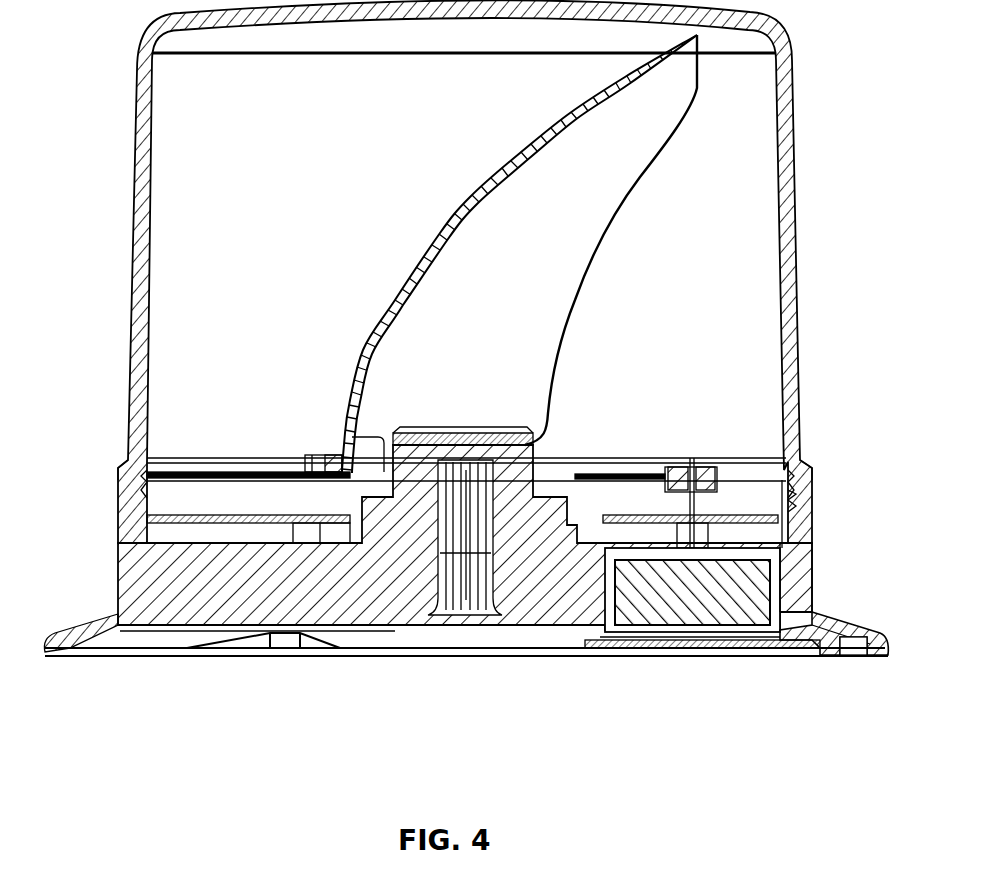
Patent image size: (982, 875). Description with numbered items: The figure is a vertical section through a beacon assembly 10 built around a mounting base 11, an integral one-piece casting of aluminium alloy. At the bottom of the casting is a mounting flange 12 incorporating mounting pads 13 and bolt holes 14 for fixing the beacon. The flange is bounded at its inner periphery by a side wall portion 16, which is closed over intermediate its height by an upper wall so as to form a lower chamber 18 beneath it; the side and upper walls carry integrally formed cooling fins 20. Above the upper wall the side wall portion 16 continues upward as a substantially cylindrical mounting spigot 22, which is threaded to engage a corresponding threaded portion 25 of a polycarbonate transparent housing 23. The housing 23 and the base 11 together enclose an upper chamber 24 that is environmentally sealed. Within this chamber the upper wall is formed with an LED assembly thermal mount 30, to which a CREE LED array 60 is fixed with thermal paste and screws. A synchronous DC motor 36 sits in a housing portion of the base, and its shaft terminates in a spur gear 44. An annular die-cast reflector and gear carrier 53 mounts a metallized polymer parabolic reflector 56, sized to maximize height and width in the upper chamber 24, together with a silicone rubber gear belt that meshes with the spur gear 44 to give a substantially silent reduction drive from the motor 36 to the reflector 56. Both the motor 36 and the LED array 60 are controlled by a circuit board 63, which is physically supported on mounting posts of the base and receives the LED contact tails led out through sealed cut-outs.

The beacon assembly 10 is at (122, 200).
The mounting base 11 is at (118, 575).
The mounting flange 12 is at (92, 640).
The mounting pads 13 is at (830, 655).
The bolt holes 14 is at (855, 645).
The side wall portion 16 is at (813, 575).
The lower chamber 18 is at (398, 637).
The cooling fins 20 is at (232, 590).
The mounting spigot 22 is at (803, 497).
The transparent housing 23 is at (793, 270).
The upper chamber 24 is at (728, 288).
The threaded portion 25 is at (125, 472).
The LED assembly thermal mount 30 is at (540, 447).
The synchronous DC motor 36 is at (672, 595).
The spur gear 44 is at (700, 470).
The reflector and gear carrier 53 is at (268, 475).
The parabolic reflector 56 is at (608, 162).
The LED array 60 is at (442, 430).
The circuit board 63 is at (178, 520).